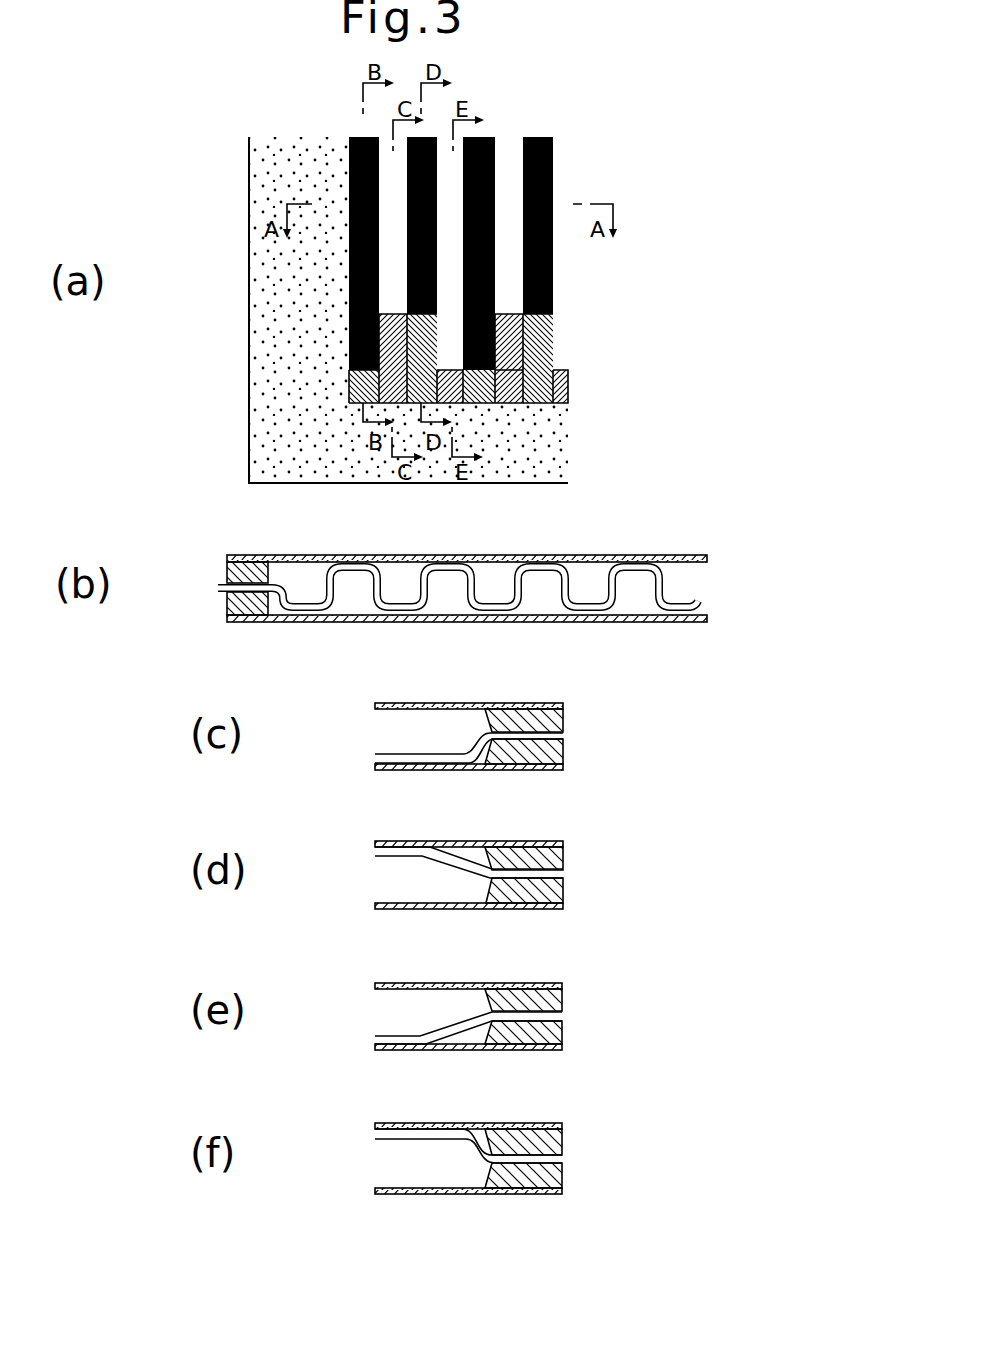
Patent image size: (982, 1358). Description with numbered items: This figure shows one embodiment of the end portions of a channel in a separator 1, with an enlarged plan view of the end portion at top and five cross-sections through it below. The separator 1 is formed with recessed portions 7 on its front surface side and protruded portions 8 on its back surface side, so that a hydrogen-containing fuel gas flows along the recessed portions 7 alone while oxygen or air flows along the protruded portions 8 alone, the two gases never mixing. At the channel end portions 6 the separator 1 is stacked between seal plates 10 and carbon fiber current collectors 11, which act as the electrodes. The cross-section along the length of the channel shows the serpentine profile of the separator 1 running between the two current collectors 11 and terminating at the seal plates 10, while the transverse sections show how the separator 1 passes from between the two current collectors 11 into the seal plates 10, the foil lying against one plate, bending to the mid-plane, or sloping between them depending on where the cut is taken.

The separator 1 is at (277, 371).
The channel end portion 6 is at (540, 355).
The recessed portion 7 is at (553, 165).
The protruded portion 8 is at (503, 158).
The seal plate 10 is at (236, 574).
The carbon fiber current collector 11 is at (708, 558).